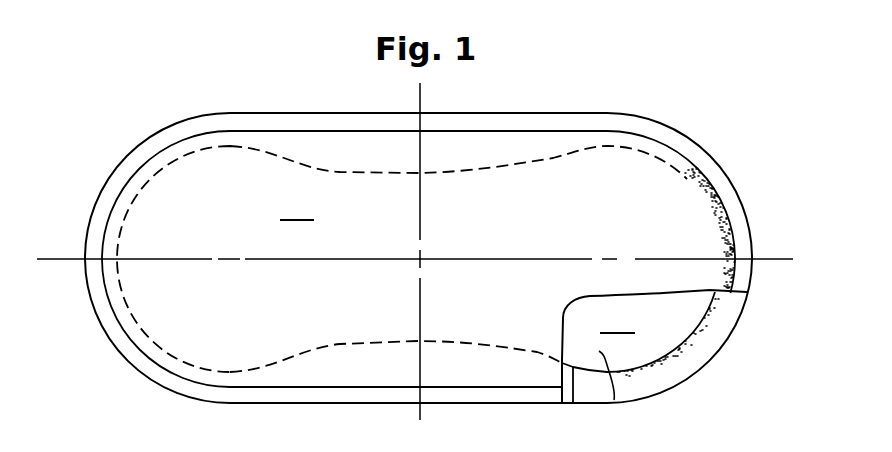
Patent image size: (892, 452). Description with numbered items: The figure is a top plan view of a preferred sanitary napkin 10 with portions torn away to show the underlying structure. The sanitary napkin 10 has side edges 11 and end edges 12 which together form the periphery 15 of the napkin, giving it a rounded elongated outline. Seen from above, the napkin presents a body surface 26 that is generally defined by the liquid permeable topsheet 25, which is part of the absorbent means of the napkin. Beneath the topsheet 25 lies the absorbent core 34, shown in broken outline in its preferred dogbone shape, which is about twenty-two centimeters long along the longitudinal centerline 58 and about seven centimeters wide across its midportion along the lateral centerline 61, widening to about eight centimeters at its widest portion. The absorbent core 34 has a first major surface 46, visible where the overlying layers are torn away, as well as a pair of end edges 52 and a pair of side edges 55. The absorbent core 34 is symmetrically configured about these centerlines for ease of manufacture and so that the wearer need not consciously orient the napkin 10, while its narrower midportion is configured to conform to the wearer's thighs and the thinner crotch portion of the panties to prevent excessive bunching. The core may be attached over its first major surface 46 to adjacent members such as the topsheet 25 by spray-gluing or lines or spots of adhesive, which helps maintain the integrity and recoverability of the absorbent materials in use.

The sanitary napkin 10 is at (670, 85).
The side edges 11 is at (278, 114).
The end edges 12 is at (95, 205).
The periphery 15 is at (147, 140).
The topsheet 25 is at (223, 157).
The body surface 26 is at (297, 206).
The absorbent core 34 is at (614, 400).
The first major surface 46 is at (654, 346).
The end edges 52 is at (713, 304).
The side edges 55 is at (572, 403).
The longitudinal centerline 58 is at (766, 259).
The lateral centerline 61 is at (424, 104).